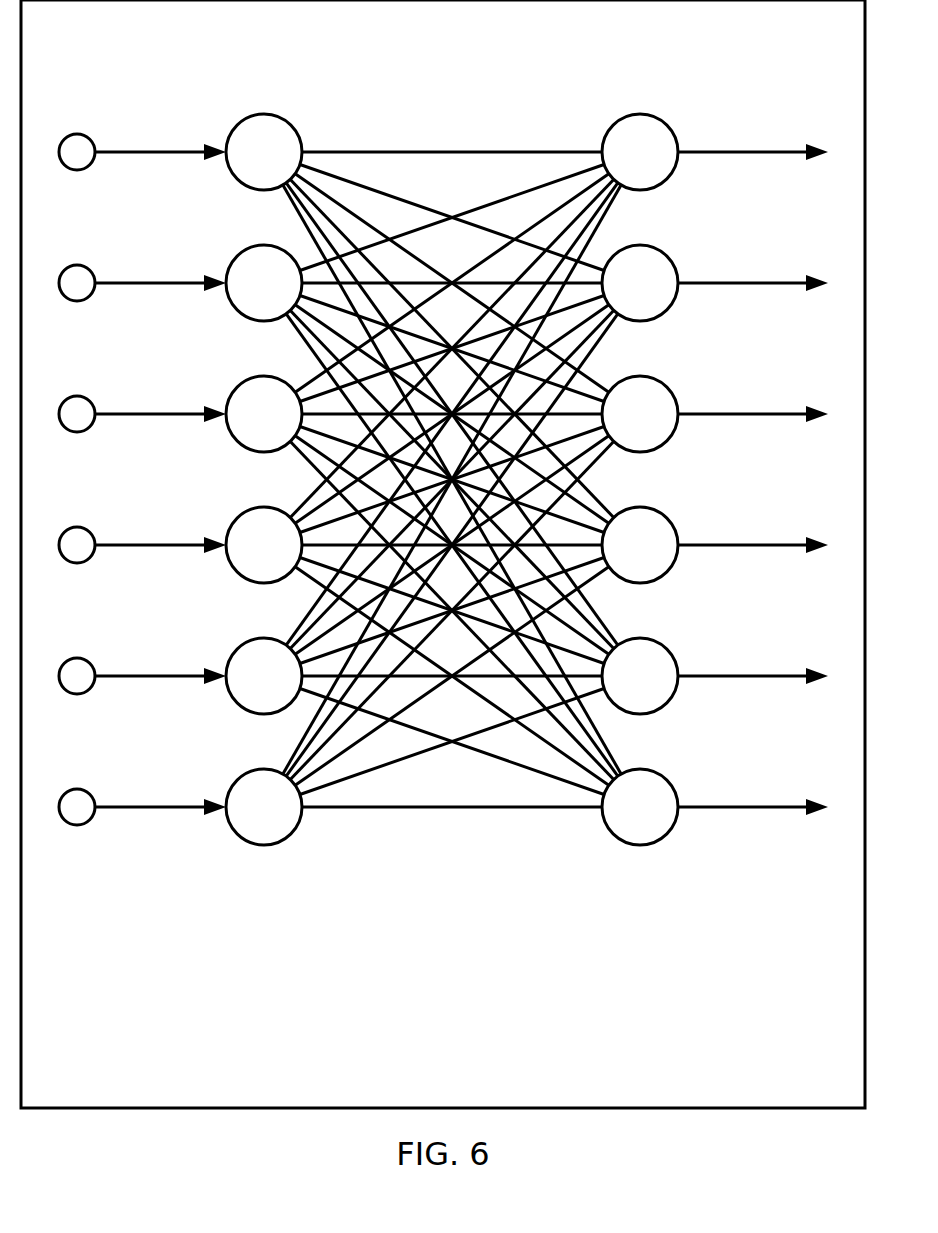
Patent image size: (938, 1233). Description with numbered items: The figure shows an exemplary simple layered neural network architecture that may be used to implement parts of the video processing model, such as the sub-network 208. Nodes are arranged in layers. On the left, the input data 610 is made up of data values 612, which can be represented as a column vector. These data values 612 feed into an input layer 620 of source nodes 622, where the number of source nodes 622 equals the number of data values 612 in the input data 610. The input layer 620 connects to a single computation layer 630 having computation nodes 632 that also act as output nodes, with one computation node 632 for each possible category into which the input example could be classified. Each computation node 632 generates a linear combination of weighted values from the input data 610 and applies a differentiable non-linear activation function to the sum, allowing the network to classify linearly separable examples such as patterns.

The sub-network 208 is at (421, 1095).
The input data 610 is at (77, 96).
The data values 612 is at (77, 817).
The input layer 620 is at (266, 80).
The source nodes 622 is at (264, 835).
The computation layer 630 is at (642, 80).
The computation nodes 632 is at (640, 835).